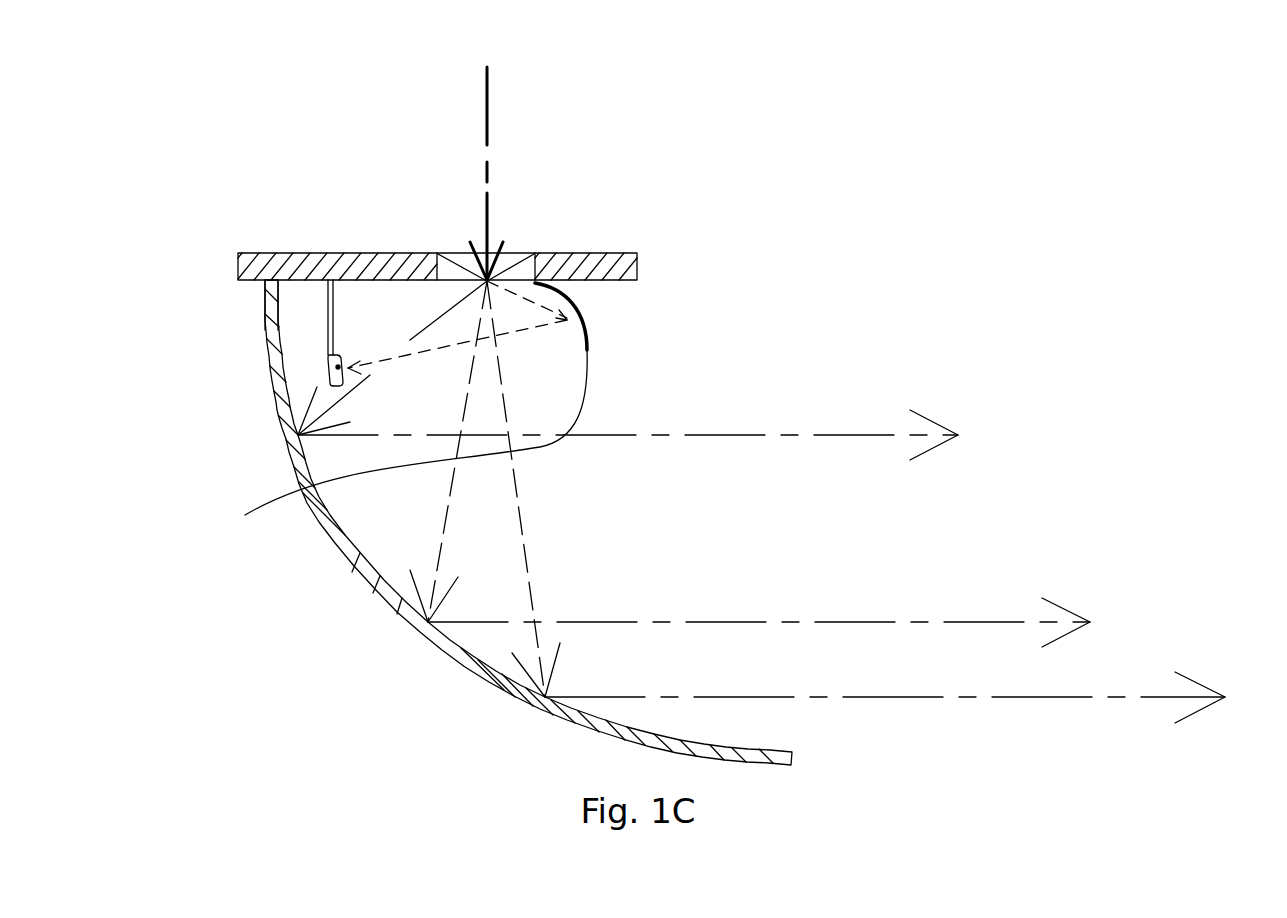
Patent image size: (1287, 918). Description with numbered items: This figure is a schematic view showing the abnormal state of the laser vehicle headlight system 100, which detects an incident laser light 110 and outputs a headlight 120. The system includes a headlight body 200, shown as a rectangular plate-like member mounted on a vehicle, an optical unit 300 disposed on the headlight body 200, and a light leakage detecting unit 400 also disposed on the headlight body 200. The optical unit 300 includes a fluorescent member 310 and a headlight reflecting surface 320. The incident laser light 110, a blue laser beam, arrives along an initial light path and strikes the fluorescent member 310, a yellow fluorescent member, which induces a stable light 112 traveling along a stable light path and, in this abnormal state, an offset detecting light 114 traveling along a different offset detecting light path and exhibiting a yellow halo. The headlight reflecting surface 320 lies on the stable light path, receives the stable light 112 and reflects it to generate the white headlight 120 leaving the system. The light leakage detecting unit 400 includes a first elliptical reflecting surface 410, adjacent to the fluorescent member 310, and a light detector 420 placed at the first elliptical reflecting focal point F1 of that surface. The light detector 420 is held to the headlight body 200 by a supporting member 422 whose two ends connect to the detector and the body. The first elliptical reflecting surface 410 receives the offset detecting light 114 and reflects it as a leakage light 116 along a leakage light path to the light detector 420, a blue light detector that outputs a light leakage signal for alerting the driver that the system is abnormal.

The laser vehicle headlight system 100 is at (149, 27).
The incident laser light 110 is at (487, 140).
The stable light 112 is at (520, 512).
The offset detecting light 114 is at (577, 296).
The leakage light 116 is at (548, 325).
The headlight 120 is at (1067, 697).
The headlight body 200 is at (635, 268).
The optical unit 300 is at (130, 235).
The fluorescent member 310 is at (470, 252).
The headlight reflecting surface 320 is at (265, 323).
The light leakage detecting unit 400 is at (168, 428).
The first elliptical reflecting surface 410 is at (303, 485).
The light detector 420 is at (328, 381).
The supporting member 422 is at (323, 338).
The first elliptical reflecting focal point F1 is at (344, 364).